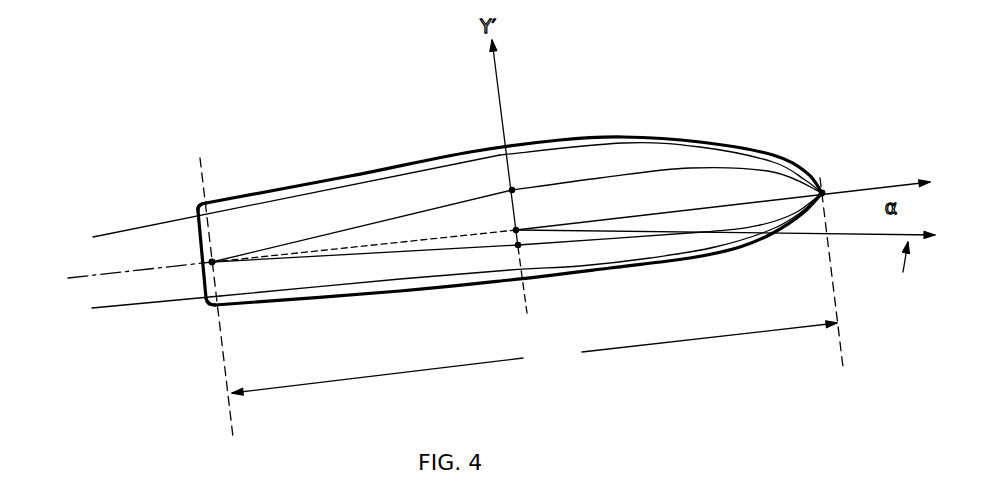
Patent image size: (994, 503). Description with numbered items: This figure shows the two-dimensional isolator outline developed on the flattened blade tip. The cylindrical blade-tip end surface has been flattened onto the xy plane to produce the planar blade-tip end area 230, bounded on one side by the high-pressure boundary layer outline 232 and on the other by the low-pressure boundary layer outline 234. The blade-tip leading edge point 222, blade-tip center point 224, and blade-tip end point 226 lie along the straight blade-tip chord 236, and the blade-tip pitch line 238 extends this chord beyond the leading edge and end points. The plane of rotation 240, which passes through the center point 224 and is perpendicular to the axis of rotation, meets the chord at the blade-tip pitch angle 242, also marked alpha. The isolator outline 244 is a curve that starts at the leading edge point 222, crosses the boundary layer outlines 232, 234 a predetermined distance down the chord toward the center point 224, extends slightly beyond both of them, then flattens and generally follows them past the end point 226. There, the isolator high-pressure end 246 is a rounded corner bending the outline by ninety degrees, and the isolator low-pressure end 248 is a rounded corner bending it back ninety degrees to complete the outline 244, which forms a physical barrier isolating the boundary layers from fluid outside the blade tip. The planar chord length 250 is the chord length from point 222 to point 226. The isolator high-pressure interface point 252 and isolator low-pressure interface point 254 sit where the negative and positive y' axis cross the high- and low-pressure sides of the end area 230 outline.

The blade-tip leading edge point 222 is at (822, 193).
The blade-tip center point 224 is at (516, 230).
The blade-tip end point 226 is at (212, 262).
The planar blade-tip end area 230 is at (658, 183).
The high-pressure boundary layer outline 232 is at (570, 276).
The low-pressure boundary layer outline 234 is at (478, 153).
The blade-tip chord 236 is at (422, 240).
The blade-tip pitch line 238 is at (107, 275).
The plane of rotation 240 is at (884, 236).
The blade-tip pitch angle 242 is at (908, 177).
The isolator outline 244 is at (363, 172).
The isolator high-pressure end 246 is at (207, 310).
The isolator low-pressure end 248 is at (199, 206).
The planar chord length 250 is at (521, 297).
The isolator high-pressure interface point 252 is at (518, 245).
The isolator low-pressure interface point 254 is at (512, 190).